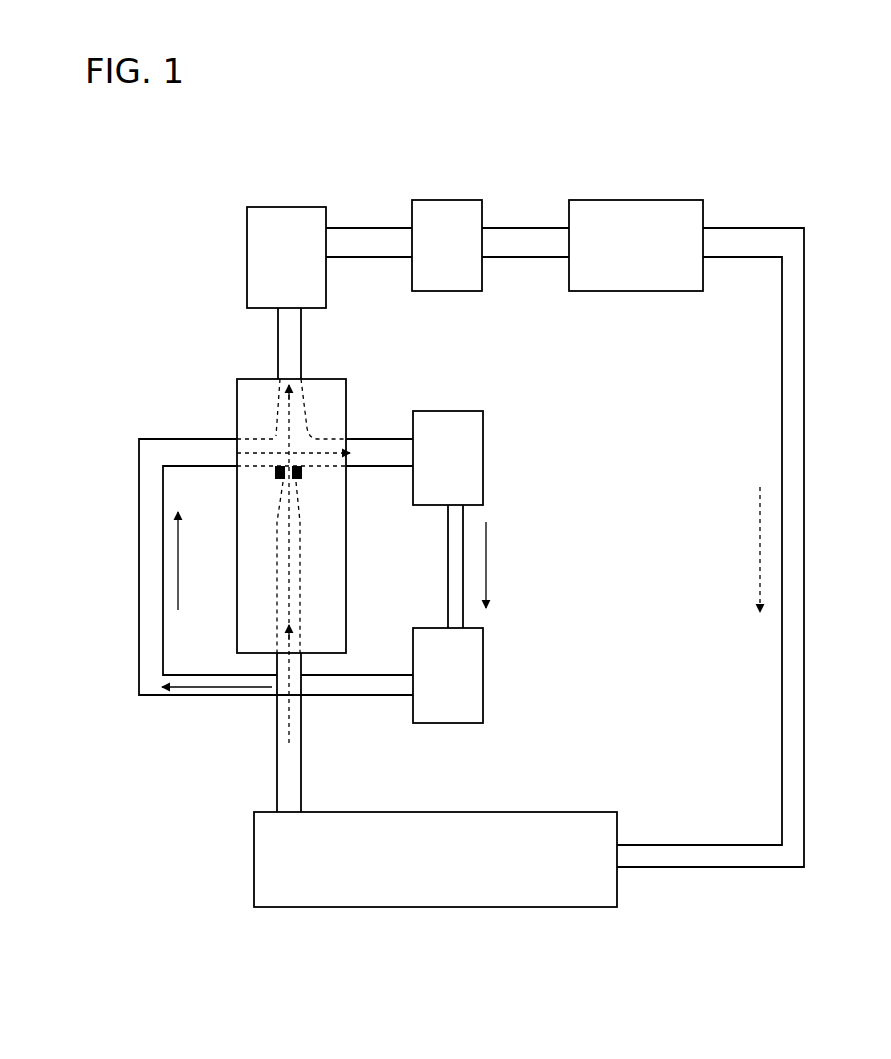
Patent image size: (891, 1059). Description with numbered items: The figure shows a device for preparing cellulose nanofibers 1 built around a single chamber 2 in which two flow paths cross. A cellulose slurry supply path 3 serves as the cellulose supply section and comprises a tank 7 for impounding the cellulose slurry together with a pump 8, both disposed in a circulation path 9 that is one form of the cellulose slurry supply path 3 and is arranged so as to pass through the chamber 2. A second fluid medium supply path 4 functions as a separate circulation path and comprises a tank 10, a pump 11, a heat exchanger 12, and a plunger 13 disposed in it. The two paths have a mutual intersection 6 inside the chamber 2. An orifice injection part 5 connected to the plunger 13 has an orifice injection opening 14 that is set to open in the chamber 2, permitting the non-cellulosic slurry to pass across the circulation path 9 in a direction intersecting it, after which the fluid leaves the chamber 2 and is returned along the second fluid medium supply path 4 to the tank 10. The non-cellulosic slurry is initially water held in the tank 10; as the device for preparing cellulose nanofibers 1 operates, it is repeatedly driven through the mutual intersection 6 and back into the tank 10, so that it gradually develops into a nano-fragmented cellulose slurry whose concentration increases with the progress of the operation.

The device for preparing cellulose nanofibers 1 is at (777, 121).
The single chamber 2 is at (346, 379).
The cellulose slurry supply path 3 is at (147, 595).
The second fluid medium supply path 4 is at (797, 658).
The orifice injection part 5 is at (300, 545).
The mutual intersection 6 is at (278, 452).
The tank 7 is at (483, 458).
The pump 8 is at (483, 677).
The circulation path 9 is at (203, 700).
The tank 10 is at (282, 207).
The pump 11 is at (462, 200).
The heat exchanger 12 is at (632, 200).
The plunger 13 is at (537, 910).
The orifice injection opening 14 is at (778, 858).